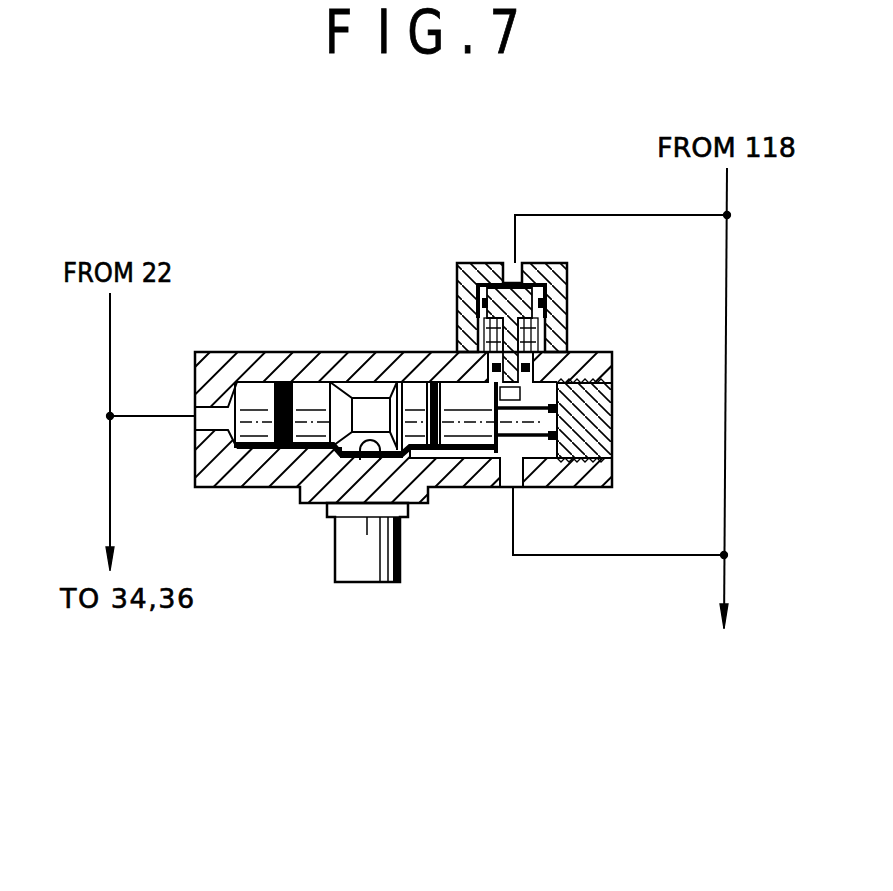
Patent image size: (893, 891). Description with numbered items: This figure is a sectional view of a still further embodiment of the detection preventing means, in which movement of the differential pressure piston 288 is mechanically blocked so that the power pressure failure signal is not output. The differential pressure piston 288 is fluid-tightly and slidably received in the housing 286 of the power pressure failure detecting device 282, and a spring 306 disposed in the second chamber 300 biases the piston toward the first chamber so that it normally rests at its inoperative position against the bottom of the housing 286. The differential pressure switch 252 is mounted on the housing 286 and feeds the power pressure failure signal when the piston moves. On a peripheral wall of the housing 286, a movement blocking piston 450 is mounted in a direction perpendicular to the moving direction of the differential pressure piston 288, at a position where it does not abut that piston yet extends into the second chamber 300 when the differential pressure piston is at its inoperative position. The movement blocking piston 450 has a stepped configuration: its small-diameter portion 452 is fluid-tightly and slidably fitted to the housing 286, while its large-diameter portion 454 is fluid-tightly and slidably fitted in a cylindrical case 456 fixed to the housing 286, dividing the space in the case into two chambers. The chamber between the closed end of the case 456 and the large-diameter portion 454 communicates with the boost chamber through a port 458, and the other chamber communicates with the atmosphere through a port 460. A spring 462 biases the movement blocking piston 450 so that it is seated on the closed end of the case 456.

The differential pressure switch 252 is at (403, 567).
The power pressure failure detecting device 282 is at (280, 496).
The housing 286 is at (297, 358).
The differential pressure piston 288 is at (246, 398).
The second chamber 300 is at (545, 446).
The spring 306 is at (557, 411).
The movement blocking piston 450 is at (462, 280).
The small-diameter portion 452 is at (468, 330).
The large-diameter portion 454 is at (550, 270).
The cylindrical case 456 is at (556, 294).
The port 458 is at (511, 270).
The port 460 is at (558, 336).
The spring 462 is at (464, 308).